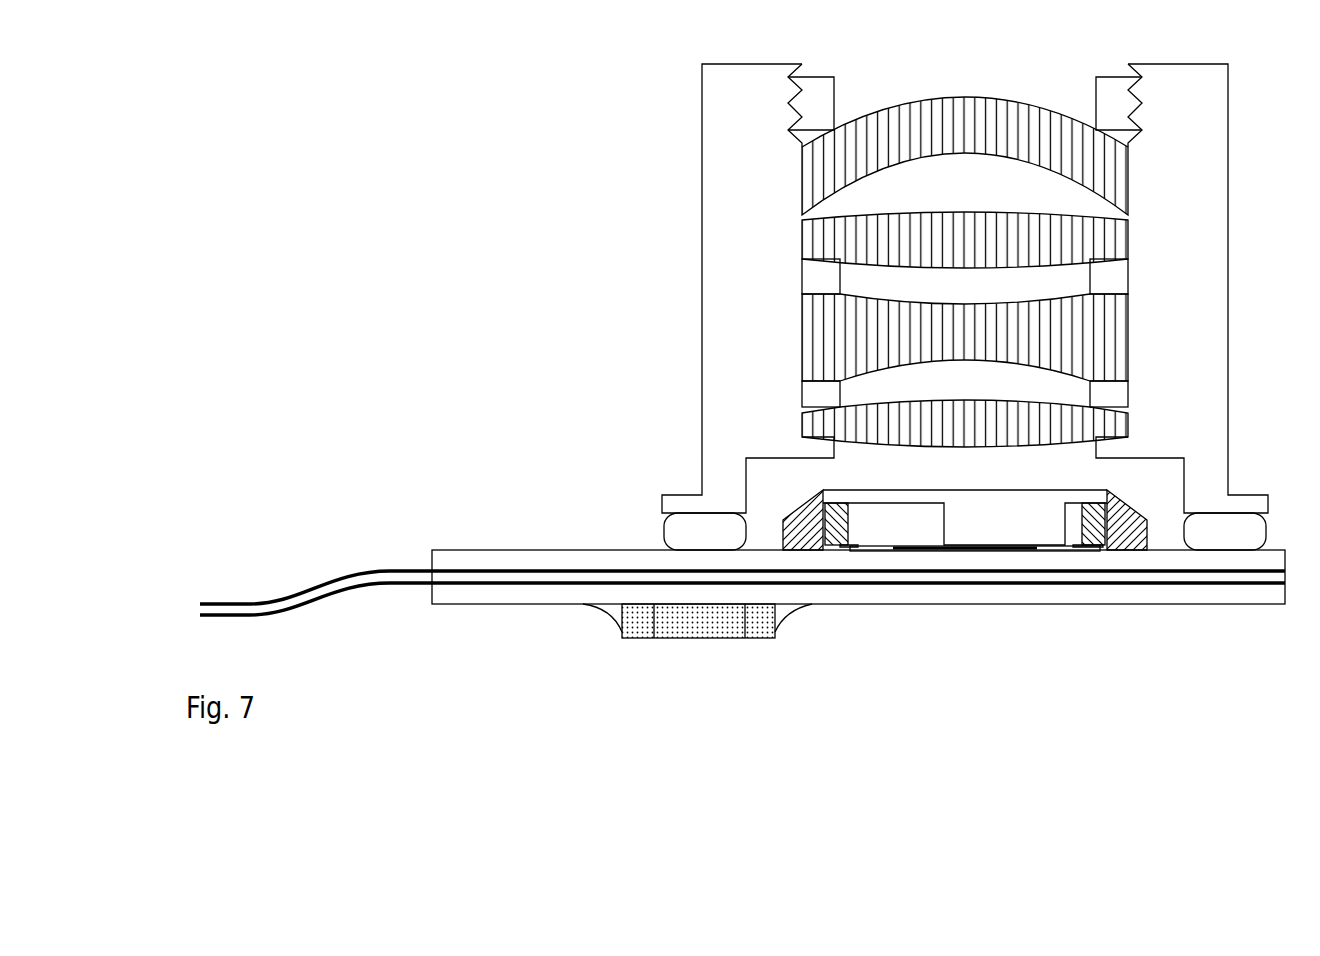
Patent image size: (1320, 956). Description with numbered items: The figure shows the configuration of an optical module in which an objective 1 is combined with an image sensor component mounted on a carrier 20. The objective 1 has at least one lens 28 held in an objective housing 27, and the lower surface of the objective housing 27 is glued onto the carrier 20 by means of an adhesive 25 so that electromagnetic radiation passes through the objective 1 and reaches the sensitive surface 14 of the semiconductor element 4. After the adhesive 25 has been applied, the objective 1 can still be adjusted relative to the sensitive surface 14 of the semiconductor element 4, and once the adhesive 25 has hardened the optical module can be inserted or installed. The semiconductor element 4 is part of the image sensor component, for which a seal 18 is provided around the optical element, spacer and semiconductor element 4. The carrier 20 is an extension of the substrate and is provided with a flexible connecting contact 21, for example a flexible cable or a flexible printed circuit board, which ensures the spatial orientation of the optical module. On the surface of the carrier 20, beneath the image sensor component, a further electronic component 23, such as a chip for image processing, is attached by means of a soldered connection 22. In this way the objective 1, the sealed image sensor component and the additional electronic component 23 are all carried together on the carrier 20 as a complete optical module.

The objective 1 is at (690, 333).
The semiconductor element 4 is at (1057, 548).
The sensitive surface 14 is at (930, 548).
The seal 18 is at (1125, 545).
The carrier 20 is at (525, 560).
The flexible connecting contact 21 is at (347, 585).
The soldered connection 22 is at (616, 613).
The electronic component 23 is at (680, 625).
The adhesive 25 is at (677, 535).
The objective housing 27 is at (718, 167).
The lens 28 is at (818, 240).